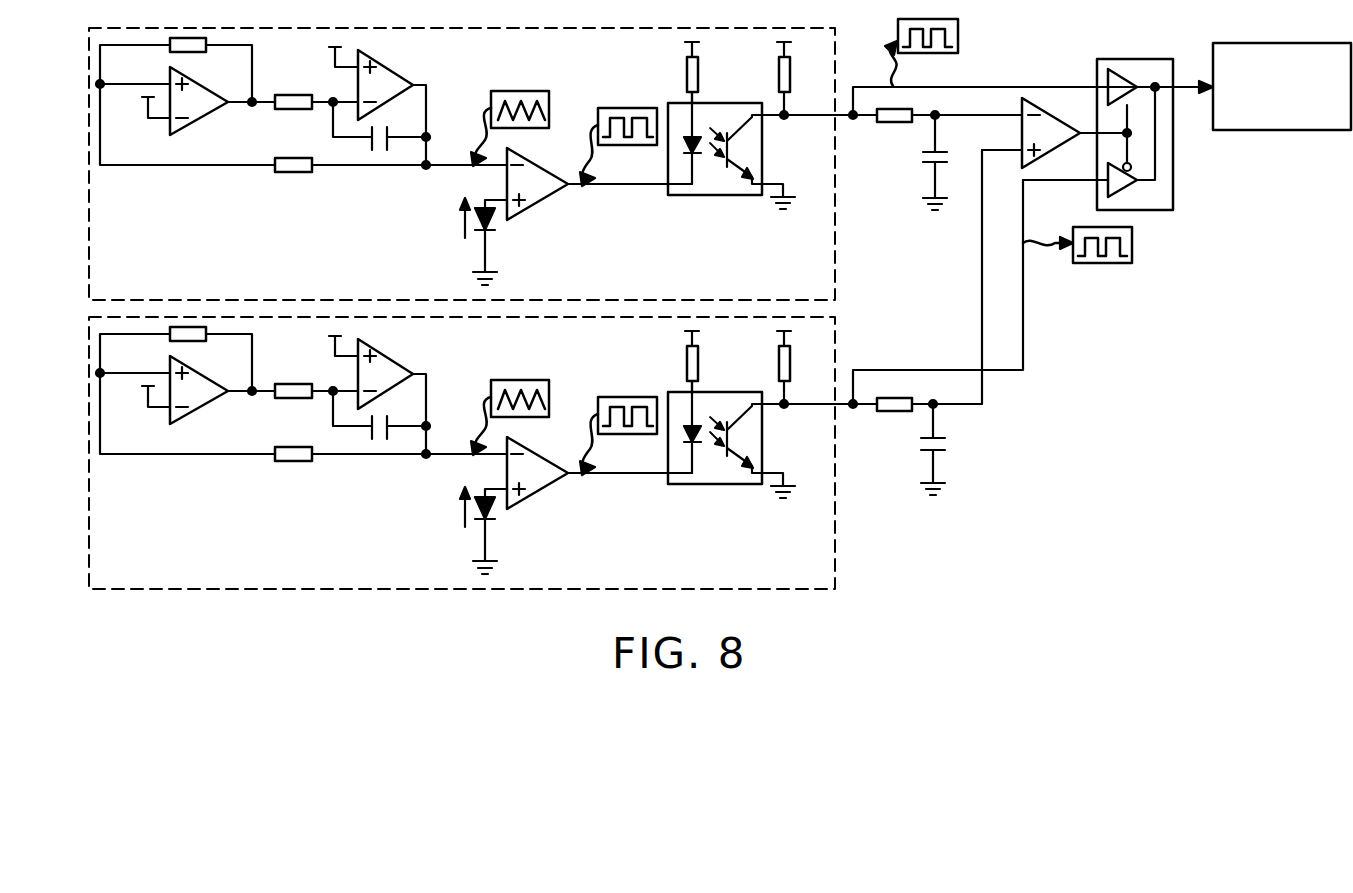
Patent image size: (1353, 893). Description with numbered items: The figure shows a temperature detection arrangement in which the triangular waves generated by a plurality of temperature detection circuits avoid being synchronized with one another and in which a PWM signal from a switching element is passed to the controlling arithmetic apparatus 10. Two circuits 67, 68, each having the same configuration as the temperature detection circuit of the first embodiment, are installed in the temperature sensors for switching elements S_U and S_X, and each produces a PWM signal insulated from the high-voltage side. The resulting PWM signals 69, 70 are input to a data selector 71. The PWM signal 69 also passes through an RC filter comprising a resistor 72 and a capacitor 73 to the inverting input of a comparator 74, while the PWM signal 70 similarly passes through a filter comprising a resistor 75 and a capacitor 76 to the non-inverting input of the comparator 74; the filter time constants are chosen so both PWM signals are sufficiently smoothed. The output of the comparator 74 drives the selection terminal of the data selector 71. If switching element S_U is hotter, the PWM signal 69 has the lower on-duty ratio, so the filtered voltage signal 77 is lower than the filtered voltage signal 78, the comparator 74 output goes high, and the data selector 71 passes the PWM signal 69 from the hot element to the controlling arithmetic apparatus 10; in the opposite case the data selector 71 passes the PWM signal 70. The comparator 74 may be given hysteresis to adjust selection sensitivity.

The controlling arithmetic apparatus 10 is at (1280, 131).
The circuit 67 is at (838, 238).
The circuit 68 is at (838, 528).
The PWM signal 69 is at (960, 36).
The PWM signal 70 is at (1092, 263).
The data selector 71 is at (1156, 210).
The resistor 72 is at (886, 123).
The capacitor 73 is at (948, 150).
The comparator 74 is at (1043, 99).
The resistor 75 is at (886, 412).
The capacitor 76 is at (947, 437).
The voltage signal 77 is at (960, 108).
The voltage signal 78 is at (885, 370).